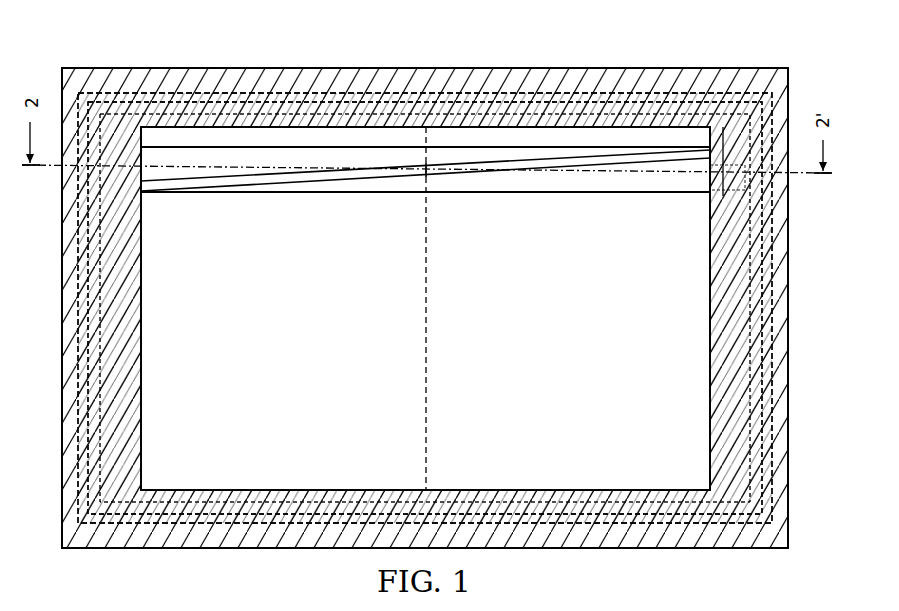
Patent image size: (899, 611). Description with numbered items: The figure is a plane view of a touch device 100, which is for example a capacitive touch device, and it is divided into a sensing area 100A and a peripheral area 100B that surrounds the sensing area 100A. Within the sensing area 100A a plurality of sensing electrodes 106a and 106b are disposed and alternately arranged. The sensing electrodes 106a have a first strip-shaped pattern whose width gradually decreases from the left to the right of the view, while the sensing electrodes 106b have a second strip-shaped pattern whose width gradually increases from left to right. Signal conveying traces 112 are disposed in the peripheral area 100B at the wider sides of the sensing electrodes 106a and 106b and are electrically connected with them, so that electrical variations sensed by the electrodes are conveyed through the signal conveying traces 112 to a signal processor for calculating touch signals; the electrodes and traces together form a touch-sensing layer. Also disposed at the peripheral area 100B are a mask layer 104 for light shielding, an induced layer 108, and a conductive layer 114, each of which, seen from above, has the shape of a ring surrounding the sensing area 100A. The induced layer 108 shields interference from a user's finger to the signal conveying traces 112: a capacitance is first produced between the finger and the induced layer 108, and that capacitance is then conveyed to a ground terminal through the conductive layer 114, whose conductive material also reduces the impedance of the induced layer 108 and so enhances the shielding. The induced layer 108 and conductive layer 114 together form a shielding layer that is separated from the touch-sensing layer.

The touch device 100 is at (810, 54).
The sensing area 100A is at (370, 124).
The peripheral area 100B is at (472, 66).
The mask layer 104 is at (790, 78).
The sensing electrodes 106a is at (231, 153).
The sensing electrodes 106b is at (660, 152).
The induced layer 108 is at (790, 200).
The signal conveying traces 112 is at (762, 377).
The conductive layer 114 is at (778, 302).